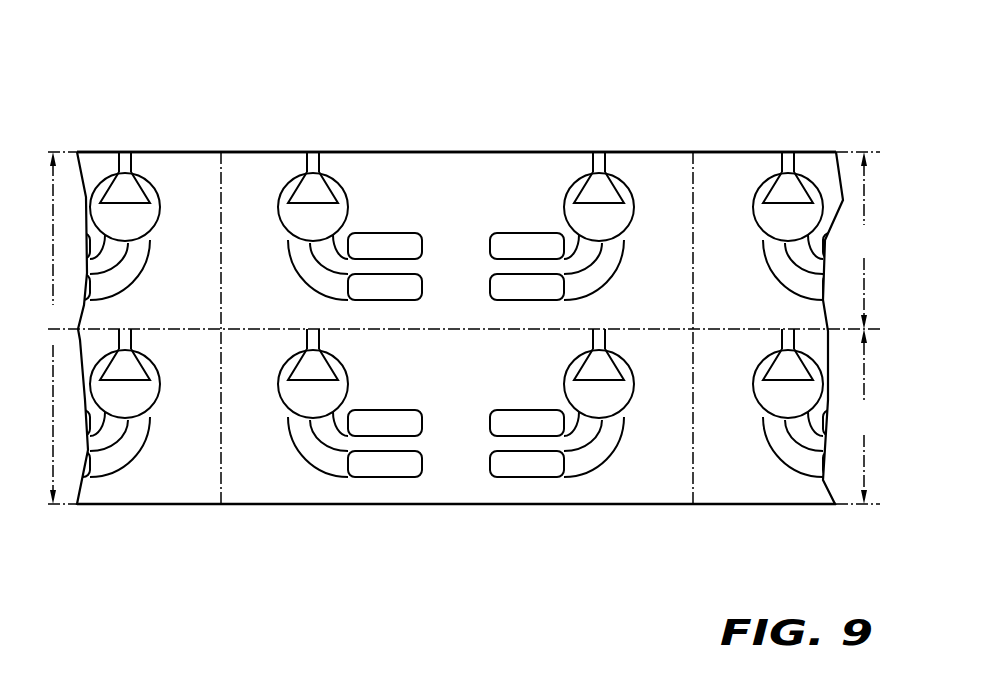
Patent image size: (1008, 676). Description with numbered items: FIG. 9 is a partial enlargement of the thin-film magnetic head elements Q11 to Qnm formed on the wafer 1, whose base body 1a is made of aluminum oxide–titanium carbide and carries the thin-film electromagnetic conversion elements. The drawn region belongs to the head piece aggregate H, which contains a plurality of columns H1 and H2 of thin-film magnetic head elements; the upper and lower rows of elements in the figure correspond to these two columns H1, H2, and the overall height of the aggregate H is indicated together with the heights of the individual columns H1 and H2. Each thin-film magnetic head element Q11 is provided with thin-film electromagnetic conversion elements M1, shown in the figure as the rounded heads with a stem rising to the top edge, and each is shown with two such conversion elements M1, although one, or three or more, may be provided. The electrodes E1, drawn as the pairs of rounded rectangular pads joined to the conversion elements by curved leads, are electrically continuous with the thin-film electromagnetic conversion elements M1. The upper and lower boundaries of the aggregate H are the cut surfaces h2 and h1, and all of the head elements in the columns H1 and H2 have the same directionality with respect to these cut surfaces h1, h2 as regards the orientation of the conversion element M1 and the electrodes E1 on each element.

The wafer 1 is at (680, 510).
The base body 1a is at (703, 152).
The thin-film magnetic head element Q11 is at (510, 71).
The thin-film electromagnetic conversion element M1 is at (296, 178).
The electrode E1 is at (396, 283).
The cut surface h2 is at (227, 140).
The cut surface h1 is at (251, 512).
The head piece aggregate H is at (54, 328).
The column H2 is at (865, 240).
The column H1 is at (863, 416).